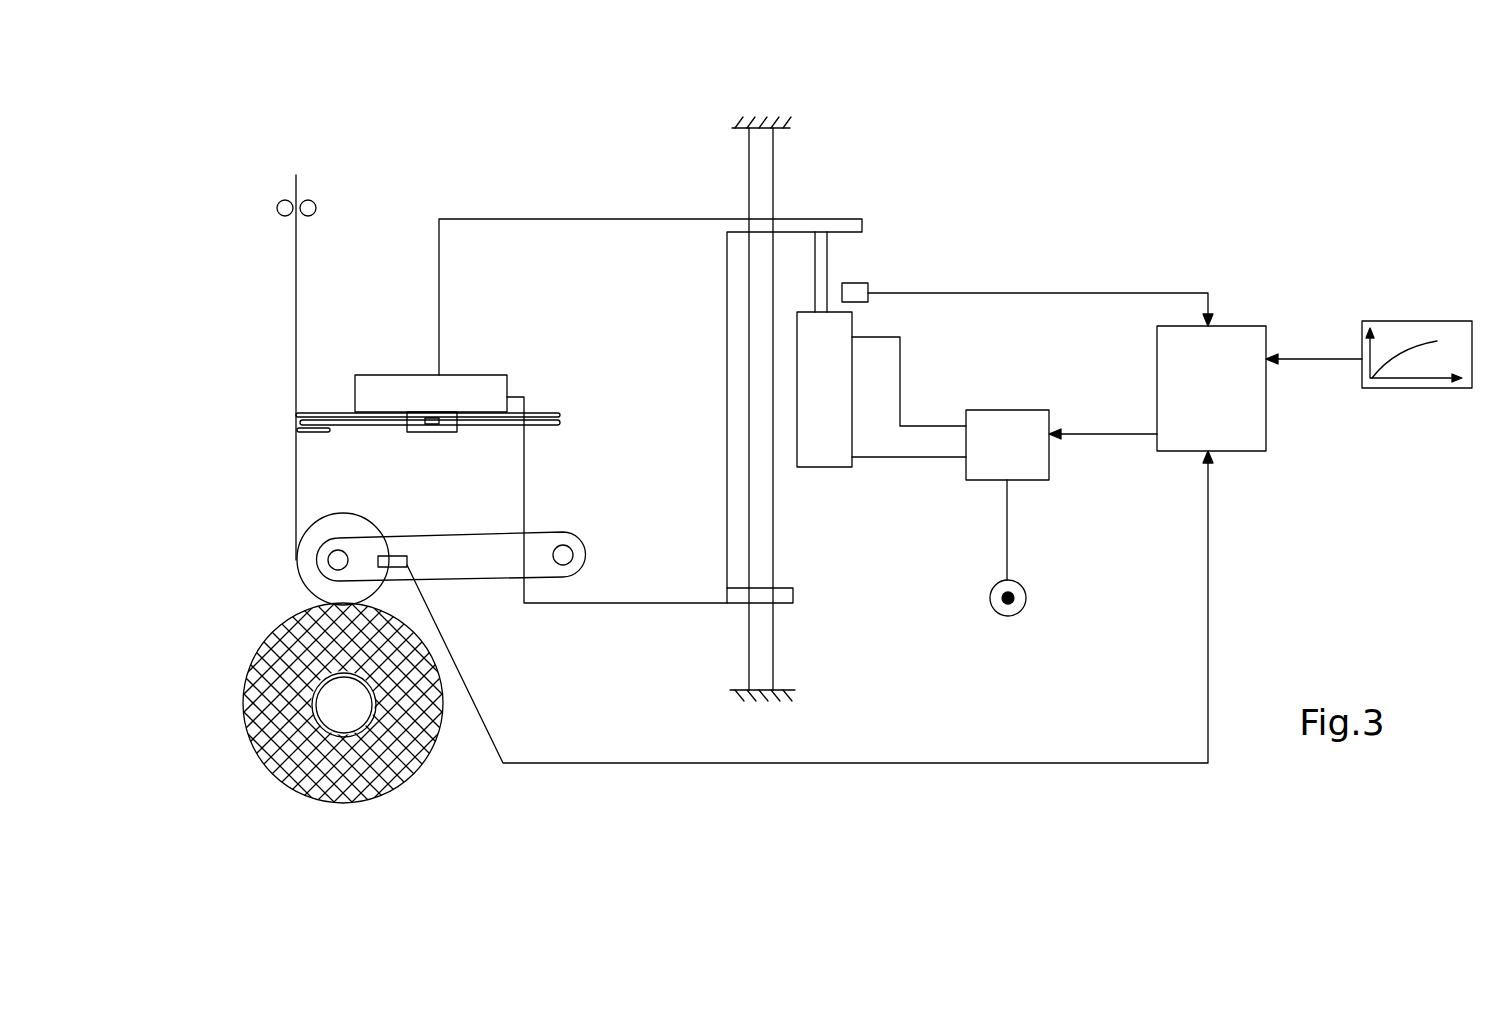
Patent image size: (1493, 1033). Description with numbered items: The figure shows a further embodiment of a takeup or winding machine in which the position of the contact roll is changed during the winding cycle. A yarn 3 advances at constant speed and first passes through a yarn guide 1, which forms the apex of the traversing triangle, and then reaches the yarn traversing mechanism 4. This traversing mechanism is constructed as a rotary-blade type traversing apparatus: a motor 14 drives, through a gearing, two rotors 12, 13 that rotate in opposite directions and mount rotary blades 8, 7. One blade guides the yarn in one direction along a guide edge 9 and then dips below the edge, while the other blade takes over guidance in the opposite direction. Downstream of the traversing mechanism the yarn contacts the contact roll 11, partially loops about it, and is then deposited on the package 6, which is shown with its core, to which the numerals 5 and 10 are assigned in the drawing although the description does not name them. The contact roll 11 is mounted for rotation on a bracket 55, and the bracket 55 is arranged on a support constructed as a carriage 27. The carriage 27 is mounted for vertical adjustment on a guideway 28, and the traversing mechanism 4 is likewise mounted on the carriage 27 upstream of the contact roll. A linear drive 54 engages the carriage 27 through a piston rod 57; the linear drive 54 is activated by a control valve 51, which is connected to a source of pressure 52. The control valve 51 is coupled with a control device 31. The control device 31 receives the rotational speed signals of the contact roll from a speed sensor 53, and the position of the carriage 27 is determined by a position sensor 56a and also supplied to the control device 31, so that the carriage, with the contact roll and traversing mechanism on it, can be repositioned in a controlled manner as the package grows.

The yarn guide 1 is at (310, 200).
The yarn 3 is at (295, 253).
The yarn traversing mechanism 4 is at (330, 388).
The reel core 5 is at (342, 720).
The package 6 is at (263, 730).
The rotary blade 7 is at (298, 422).
The rotary blade 8 is at (297, 415).
The guide edge 9 is at (297, 430).
The reel hub 10 is at (315, 682).
The contact roll 11 is at (302, 565).
The rotor 12 is at (549, 437).
The rotor 13 is at (447, 412).
The motor 14 is at (388, 392).
The carriage 27 is at (547, 262).
The guideway 28 is at (758, 179).
The control device 31 is at (1238, 402).
The control valve 51 is at (1015, 433).
The source of pressure 52 is at (1003, 613).
The speed sensor 53 is at (400, 562).
The linear drive 54 is at (823, 455).
The bracket 55 is at (478, 563).
The position sensor 56a is at (858, 293).
The piston rod 57 is at (822, 263).